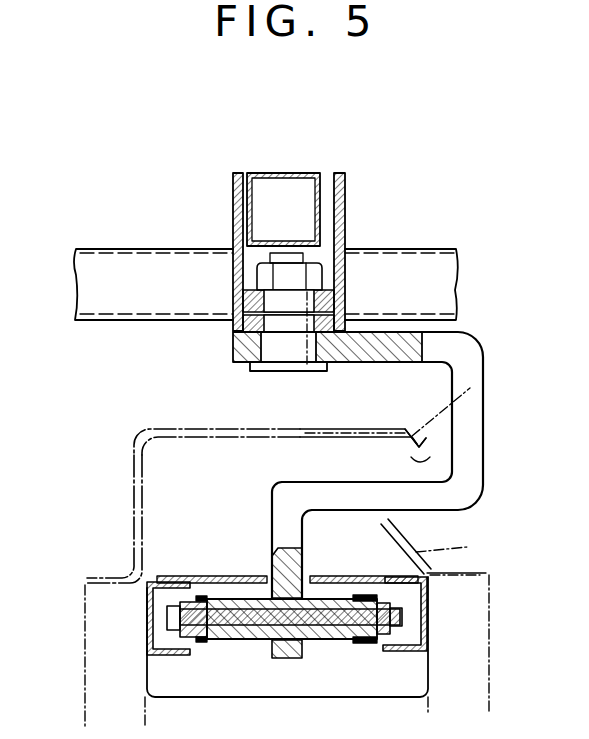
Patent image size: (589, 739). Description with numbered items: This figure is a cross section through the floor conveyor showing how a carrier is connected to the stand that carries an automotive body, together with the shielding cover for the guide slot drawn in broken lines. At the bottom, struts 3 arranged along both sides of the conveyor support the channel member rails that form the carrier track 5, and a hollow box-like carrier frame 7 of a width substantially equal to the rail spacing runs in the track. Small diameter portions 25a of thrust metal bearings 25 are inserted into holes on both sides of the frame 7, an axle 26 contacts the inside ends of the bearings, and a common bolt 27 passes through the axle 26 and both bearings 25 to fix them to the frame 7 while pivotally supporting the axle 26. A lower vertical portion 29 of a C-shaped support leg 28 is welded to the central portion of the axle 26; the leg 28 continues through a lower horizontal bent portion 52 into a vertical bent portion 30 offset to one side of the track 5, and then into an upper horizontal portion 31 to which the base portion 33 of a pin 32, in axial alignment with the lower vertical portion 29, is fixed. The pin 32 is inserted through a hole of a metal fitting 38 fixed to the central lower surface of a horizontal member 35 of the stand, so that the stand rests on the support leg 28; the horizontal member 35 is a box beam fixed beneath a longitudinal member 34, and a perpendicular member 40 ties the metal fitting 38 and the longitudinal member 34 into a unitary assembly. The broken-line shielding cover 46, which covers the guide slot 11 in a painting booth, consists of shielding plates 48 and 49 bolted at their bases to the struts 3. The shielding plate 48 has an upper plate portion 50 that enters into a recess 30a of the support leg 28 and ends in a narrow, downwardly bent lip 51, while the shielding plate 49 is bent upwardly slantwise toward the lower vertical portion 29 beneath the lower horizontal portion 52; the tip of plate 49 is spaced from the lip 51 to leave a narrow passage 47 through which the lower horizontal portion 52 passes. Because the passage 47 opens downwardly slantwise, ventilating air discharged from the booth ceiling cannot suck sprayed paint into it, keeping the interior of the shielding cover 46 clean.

The struts 3 is at (76, 641).
The carrier track 5 is at (263, 628).
The carrier frame 7 is at (213, 598).
The guide slot 11 is at (265, 580).
The thrust metal bearings 25 is at (388, 578).
The small diameter portions 25a is at (352, 595).
The axle 26 is at (256, 640).
The common bolt 27 is at (222, 638).
The C-shaped support leg 28 is at (267, 499).
The lower vertical portion 29 is at (275, 545).
The vertical bent portion 30 is at (478, 415).
The recess 30a is at (400, 464).
The upper horizontal portion 31 is at (393, 360).
The pin 32 is at (292, 303).
The base portion 33 is at (289, 352).
The longitudinal member 34 is at (291, 182).
The horizontal members 35 is at (170, 248).
The metal fittings 38 is at (235, 320).
The perpendicular members 40 is at (348, 205).
The shielding cover 46 is at (126, 461).
The passage 47 is at (428, 442).
The shielding plate 48 is at (228, 424).
The shielding plate 49 is at (459, 554).
The upper plate portion 50 is at (340, 427).
The lip 51 is at (472, 388).
The lower horizontal bent portion 52 is at (417, 508).